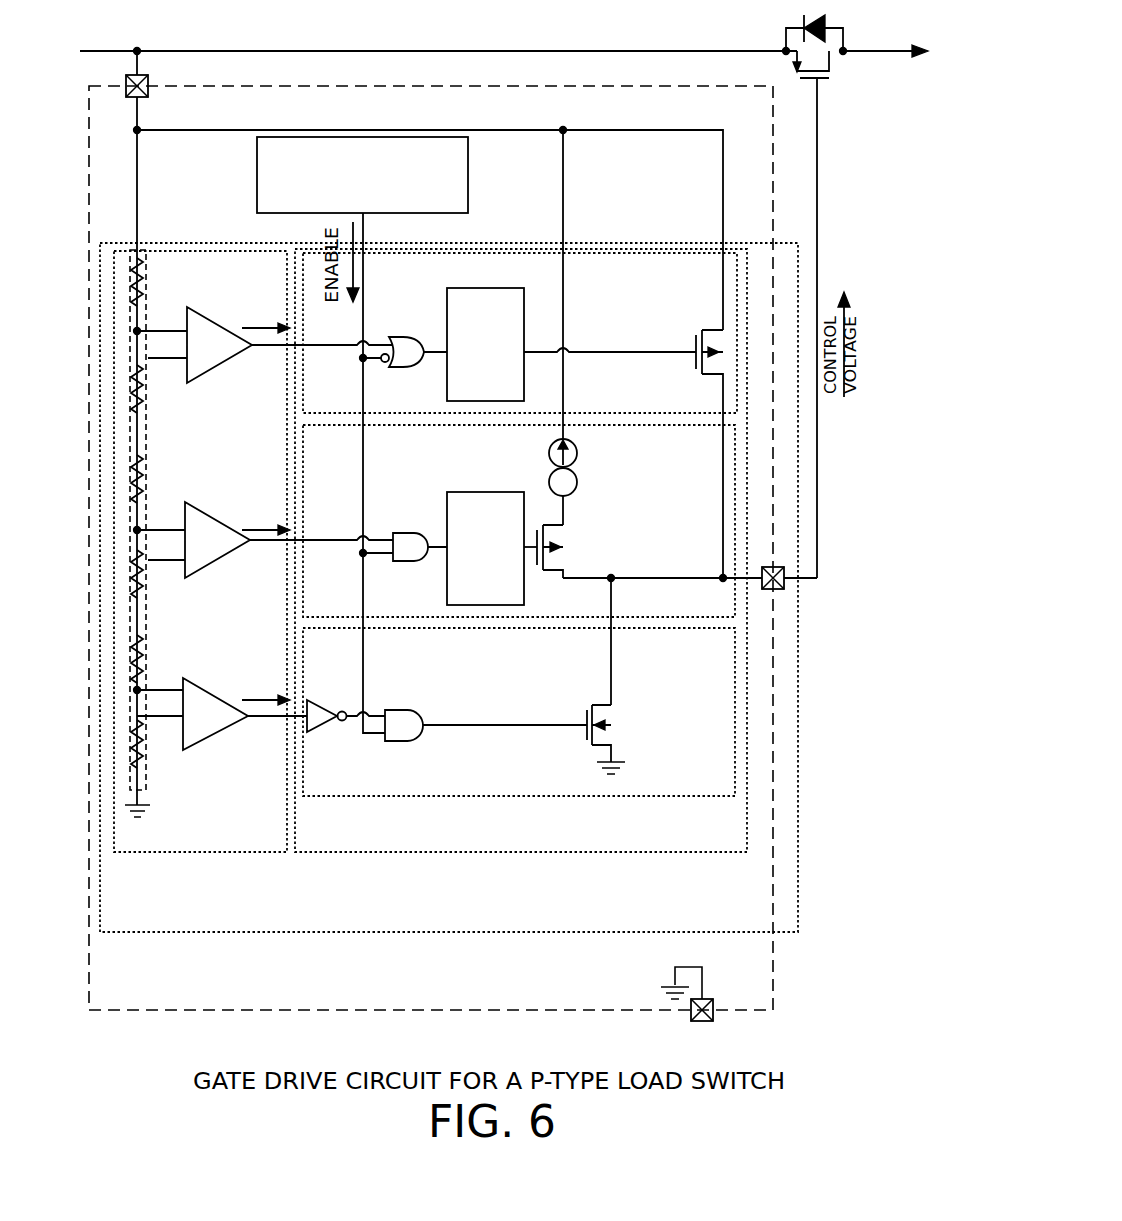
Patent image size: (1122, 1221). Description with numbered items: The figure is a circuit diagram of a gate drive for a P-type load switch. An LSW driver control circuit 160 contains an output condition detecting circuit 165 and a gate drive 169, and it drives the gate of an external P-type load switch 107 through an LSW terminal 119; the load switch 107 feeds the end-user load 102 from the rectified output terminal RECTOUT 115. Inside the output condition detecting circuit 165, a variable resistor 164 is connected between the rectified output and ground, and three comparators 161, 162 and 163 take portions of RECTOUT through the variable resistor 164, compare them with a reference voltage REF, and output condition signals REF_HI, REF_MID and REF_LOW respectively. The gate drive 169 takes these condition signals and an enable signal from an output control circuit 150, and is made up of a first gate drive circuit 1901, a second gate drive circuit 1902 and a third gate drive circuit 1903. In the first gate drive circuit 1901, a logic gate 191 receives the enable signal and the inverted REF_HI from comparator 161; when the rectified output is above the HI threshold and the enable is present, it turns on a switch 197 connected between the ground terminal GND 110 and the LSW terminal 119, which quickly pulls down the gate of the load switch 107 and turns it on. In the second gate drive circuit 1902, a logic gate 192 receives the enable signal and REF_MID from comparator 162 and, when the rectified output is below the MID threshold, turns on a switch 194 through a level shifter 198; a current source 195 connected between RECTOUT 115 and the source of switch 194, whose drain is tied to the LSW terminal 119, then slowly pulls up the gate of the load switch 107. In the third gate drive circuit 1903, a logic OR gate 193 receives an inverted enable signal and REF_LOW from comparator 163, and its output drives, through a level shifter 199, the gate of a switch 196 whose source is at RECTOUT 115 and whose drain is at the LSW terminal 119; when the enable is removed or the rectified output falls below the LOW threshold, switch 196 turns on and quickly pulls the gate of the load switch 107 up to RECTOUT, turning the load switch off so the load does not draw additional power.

The load 102 is at (885, 37).
The P-type load switch 107 is at (808, 82).
The ground terminal GND 110 is at (714, 1000).
The rectified output terminal RECTOUT 115 is at (149, 86).
The LSW terminal 119 is at (785, 584).
The output control circuit 150 is at (362, 175).
The LSW driver control circuit 160 is at (449, 587).
The comparator 161 is at (199, 690).
The comparator 162 is at (201, 514).
The comparator 163 is at (203, 319).
The variable resistor 164 is at (143, 292).
The output condition detecting circuit 165 is at (200, 551).
The gate drive 169 is at (521, 550).
The logic gate 191 is at (406, 710).
The logic gate 192 is at (404, 533).
The logic OR gate 193 is at (405, 344).
The switch 194 is at (560, 535).
The current source 195 is at (578, 451).
The switch 196 is at (699, 378).
The switch 197 is at (589, 709).
The level shifter 198 is at (492, 548).
The level shifter 199 is at (571, 344).
The first gate drive circuit 1901 is at (519, 712).
The second gate drive circuit 1902 is at (519, 521).
The third gate drive circuit 1903 is at (520, 333).